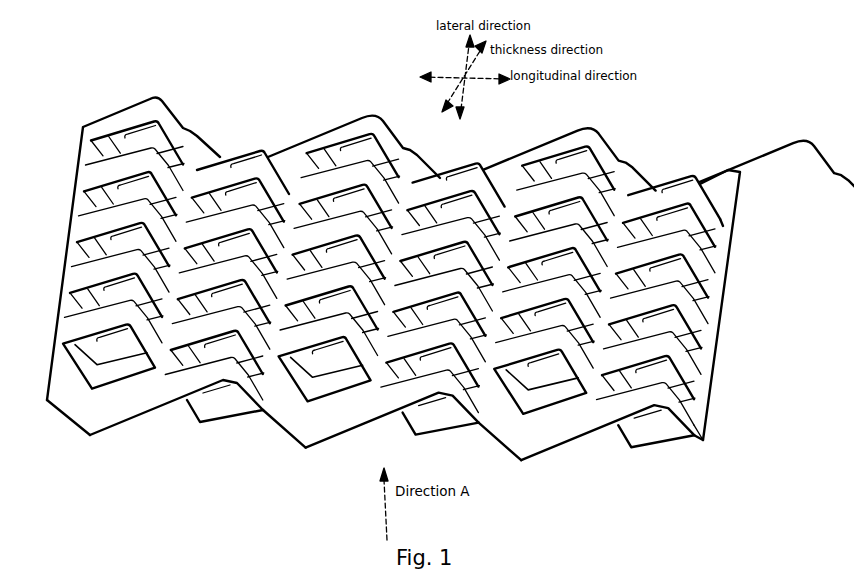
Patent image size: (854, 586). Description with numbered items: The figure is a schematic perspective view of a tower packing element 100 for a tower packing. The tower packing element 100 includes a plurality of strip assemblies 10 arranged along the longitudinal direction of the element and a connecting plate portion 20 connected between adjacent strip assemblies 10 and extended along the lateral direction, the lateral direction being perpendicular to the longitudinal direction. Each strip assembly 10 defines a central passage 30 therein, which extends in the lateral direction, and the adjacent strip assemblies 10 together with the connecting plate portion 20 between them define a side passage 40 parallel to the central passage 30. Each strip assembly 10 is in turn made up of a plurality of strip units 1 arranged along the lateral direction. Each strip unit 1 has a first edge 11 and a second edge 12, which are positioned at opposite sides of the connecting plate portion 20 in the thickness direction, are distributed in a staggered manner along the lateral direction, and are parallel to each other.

The tower packing element 100 is at (712, 98).
The strip unit 1 is at (752, 135).
The strip assembly 10 is at (710, 415).
The first edge 11 is at (720, 232).
The second edge 12 is at (720, 193).
The connecting plate portion 20 is at (293, 155).
The central passage 30 is at (582, 150).
The side passage 40 is at (638, 158).